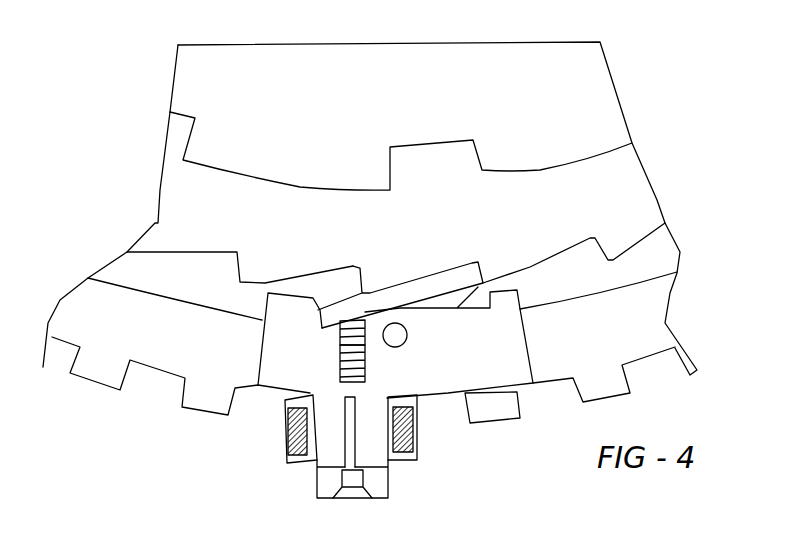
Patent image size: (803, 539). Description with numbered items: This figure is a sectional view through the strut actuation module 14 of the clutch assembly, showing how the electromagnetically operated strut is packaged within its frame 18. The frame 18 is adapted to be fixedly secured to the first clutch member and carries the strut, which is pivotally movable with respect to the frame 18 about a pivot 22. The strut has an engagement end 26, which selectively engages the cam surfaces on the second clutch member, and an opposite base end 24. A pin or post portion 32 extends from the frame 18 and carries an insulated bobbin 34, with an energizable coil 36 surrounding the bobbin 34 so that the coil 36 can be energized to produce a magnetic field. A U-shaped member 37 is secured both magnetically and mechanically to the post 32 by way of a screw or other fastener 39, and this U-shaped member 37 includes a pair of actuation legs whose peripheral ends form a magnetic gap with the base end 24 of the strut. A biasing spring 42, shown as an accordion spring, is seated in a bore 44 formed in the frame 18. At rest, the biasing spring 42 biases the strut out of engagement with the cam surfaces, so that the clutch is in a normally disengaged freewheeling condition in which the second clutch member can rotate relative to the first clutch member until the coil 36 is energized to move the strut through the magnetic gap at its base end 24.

The strut actuation module 14 is at (491, 403).
The frame 18 is at (486, 370).
The pivot 22 is at (396, 335).
The base end 24 is at (332, 318).
The engagement end 26 is at (475, 272).
The pin or post portion 32 is at (370, 435).
The insulated bobbin 34 is at (285, 403).
The energizable coil 36 is at (287, 430).
The U-shaped member 37 is at (322, 487).
The screw or other fastener 39 is at (358, 493).
The biasing spring 42 is at (340, 342).
The bore 44 is at (340, 358).